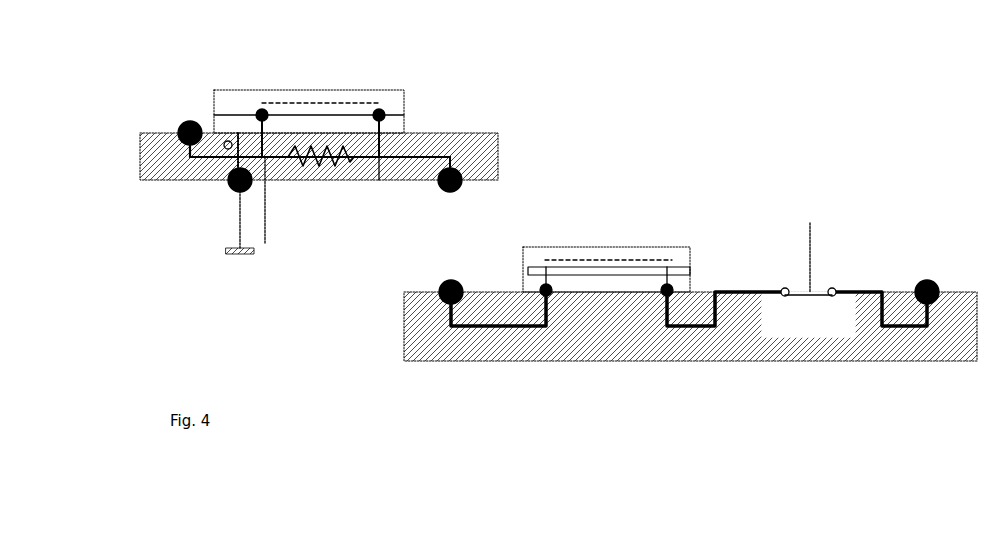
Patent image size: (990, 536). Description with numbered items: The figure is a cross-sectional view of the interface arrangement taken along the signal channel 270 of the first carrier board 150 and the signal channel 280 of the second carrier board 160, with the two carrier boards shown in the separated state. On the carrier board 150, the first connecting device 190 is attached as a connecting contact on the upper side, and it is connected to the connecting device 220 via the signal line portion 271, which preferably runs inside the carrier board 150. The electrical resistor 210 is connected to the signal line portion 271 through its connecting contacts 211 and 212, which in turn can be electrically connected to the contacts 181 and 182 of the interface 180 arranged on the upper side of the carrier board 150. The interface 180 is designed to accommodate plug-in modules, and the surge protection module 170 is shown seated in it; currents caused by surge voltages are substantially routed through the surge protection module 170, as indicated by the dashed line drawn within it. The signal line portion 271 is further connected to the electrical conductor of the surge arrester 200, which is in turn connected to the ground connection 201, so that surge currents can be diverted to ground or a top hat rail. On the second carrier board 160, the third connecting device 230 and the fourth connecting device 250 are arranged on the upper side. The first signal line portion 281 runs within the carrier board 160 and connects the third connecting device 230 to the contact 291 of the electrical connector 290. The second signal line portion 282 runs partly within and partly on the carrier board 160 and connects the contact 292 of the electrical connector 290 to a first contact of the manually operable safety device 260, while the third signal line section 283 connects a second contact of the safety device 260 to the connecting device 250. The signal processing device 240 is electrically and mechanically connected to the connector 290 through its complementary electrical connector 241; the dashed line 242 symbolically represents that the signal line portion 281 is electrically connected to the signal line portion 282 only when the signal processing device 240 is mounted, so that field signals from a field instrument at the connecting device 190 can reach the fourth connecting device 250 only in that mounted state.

The first carrier board 150 is at (264, 159).
The second carrier board 160 is at (648, 331).
The surge protection module 170 is at (347, 91).
The interface 180 is at (378, 108).
The contact of the interface 181 is at (240, 93).
The contact of the interface 182 is at (395, 81).
The first connecting device 190 is at (151, 113).
The surge arrester 200 is at (208, 117).
The ground connection 201 is at (220, 221).
The electrical resistor 210 is at (317, 214).
The connecting contact of the resistor 211 is at (270, 231).
The connecting contact of the resistor 212 is at (357, 204).
The connecting device 220 is at (499, 178).
The third connecting device 230 is at (443, 259).
The signal processing device 240 is at (646, 243).
The electrical connector 241 is at (657, 254).
The dashed line 242 is at (608, 219).
The fourth connecting device 250 is at (919, 262).
The manually operable safety device 260 is at (854, 239).
The signal channel 270 is at (165, 202).
The signal line portion 271 is at (372, 117).
The signal channel 280 is at (542, 395).
The first signal line portion 281 is at (493, 365).
The second signal line portion 282 is at (726, 367).
The third signal line section 283 is at (885, 369).
The electrical connector 290 is at (763, 281).
The contact of the electrical connector 291 is at (548, 294).
The contact of the electrical connector 292 is at (665, 294).